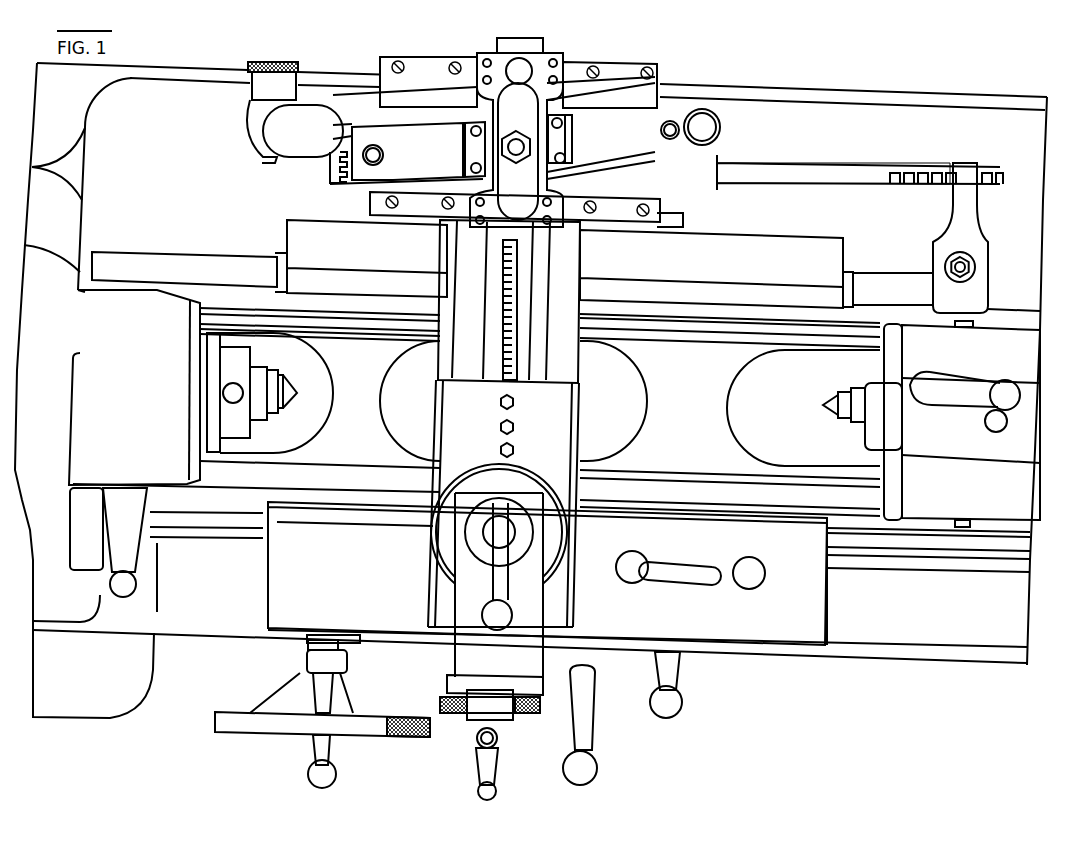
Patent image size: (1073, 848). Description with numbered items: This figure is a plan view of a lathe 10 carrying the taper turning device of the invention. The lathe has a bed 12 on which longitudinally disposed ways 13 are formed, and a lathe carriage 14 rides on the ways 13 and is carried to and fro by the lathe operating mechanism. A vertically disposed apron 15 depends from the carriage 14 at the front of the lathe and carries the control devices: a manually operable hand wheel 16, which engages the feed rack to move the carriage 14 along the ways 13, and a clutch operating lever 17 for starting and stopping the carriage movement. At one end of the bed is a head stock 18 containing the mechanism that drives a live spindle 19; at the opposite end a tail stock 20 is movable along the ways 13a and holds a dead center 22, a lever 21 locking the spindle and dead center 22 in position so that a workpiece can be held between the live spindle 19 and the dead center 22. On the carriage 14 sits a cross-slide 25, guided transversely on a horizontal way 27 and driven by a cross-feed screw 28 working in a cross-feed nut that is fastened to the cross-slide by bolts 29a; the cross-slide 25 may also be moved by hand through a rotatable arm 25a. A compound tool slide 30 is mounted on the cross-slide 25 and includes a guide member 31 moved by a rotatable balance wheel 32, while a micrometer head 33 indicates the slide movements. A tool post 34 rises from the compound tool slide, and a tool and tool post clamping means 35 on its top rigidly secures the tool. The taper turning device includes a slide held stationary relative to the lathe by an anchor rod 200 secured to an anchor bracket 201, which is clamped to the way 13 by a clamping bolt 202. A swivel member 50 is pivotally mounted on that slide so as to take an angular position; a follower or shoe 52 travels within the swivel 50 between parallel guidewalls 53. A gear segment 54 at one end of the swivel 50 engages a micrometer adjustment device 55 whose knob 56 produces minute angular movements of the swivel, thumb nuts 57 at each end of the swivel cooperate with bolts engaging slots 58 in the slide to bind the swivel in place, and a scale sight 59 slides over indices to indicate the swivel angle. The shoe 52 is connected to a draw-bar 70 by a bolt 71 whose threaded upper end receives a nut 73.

The lathe 10 is at (1017, 597).
The lathe bed 12 is at (730, 423).
The ways 13 is at (955, 560).
The ways 13a is at (745, 334).
The lathe carriage 14 is at (807, 270).
The apron 15 is at (802, 646).
The hand wheel 16 is at (262, 727).
The clutch operating lever 17 is at (590, 740).
The head stock 18 is at (115, 334).
The live spindle 19 is at (291, 400).
The tail stock 20 is at (965, 456).
The lever 21 is at (925, 387).
The dead center 22 is at (835, 402).
The cross-slide 25 is at (566, 449).
The rotatable arm 25a is at (470, 750).
The horizontal way 27 is at (447, 262).
The cross-feed screw 28 is at (520, 377).
The bolts 29a is at (509, 450).
The compound tool slide 30 is at (535, 523).
The guide member 31 is at (465, 588).
The balance wheel 32 is at (498, 739).
The micrometer head 33 is at (540, 710).
The tool post 34 is at (468, 537).
The tool and tool post clamping means 35 is at (497, 630).
The swivel member 50 is at (425, 173).
The follower or shoe 52 is at (572, 142).
The guidewalls 53 is at (622, 165).
The gear segment 54 is at (338, 181).
The micrometer adjustment device 55 is at (270, 143).
The knob 56 is at (283, 80).
The thumb nuts 57 is at (378, 146).
The slots 58 is at (375, 127).
The scale sight 59 is at (720, 128).
The draw-bar 70 is at (497, 107).
The bolt 71 is at (514, 131).
The nut 73 is at (520, 156).
The anchor rod 200 is at (975, 192).
The anchor bracket 201 is at (972, 240).
The clamping bolt 202 is at (974, 265).